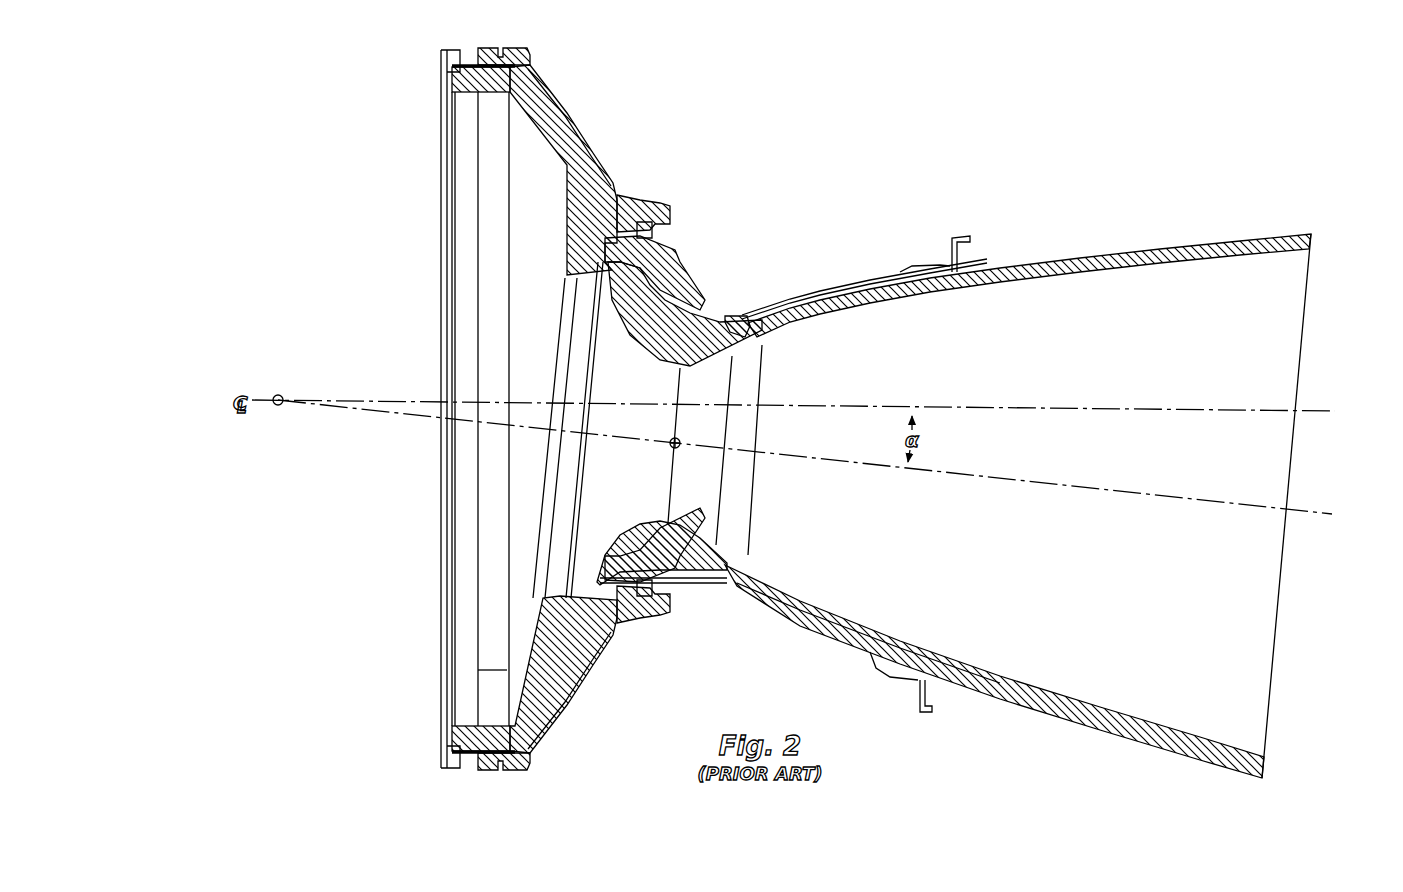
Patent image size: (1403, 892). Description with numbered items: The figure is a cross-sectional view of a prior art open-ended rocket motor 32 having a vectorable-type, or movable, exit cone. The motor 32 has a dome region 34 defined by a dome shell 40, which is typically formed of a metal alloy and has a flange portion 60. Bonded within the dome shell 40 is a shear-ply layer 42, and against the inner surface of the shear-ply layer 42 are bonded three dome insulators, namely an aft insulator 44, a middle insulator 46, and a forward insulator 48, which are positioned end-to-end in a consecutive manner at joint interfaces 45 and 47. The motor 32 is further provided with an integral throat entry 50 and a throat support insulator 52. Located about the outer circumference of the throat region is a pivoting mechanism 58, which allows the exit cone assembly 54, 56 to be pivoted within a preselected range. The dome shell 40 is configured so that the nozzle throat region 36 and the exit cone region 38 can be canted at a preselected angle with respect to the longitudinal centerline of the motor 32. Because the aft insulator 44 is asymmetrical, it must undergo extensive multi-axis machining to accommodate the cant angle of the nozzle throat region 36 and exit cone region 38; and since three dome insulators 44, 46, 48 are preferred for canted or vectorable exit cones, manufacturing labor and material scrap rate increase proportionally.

The rocket motor 32 is at (1018, 447).
The dome region 34 is at (407, 447).
The nozzle throat region 36 is at (691, 465).
The exit cone region 38 is at (943, 538).
The dome shell 40 is at (562, 101).
The shear-ply layer 42 is at (583, 132).
The aft insulator 44 is at (598, 193).
The joint interface 45 is at (477, 670).
The middle insulator 46 is at (512, 67).
The joint interface 47 is at (478, 625).
The forward insulator 48 is at (462, 78).
The throat entry 50 is at (693, 343).
The throat support insulator 52 is at (745, 332).
The exit cone assembly 54 is at (850, 297).
The exit cone assembly 56 is at (1040, 262).
The pivoting mechanism 58 is at (722, 277).
The flange portion 60 is at (446, 50).